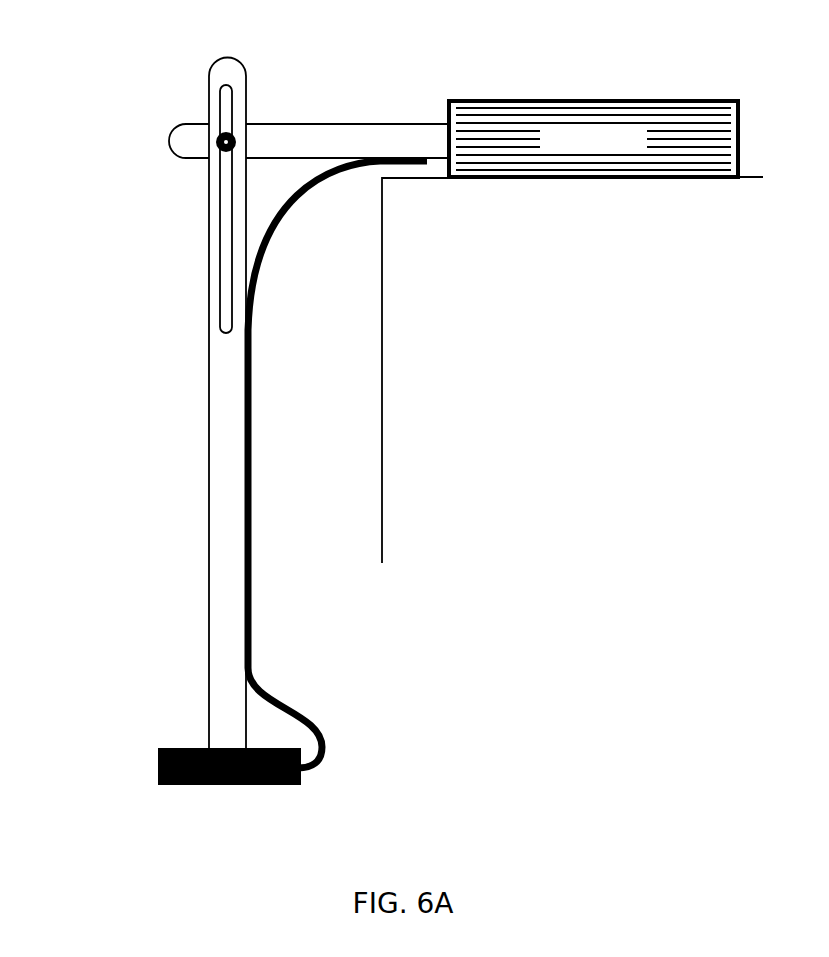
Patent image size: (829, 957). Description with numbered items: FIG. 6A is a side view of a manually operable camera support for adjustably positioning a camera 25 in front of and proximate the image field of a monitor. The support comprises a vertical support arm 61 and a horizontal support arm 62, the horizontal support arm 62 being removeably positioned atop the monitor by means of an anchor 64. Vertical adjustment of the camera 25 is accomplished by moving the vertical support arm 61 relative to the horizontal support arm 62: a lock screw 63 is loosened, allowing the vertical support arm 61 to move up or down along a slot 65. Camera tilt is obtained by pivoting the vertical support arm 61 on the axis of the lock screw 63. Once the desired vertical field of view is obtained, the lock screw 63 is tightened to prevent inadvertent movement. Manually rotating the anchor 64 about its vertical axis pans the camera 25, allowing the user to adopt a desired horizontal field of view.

The camera 25 is at (158, 769).
The vertical support arm 61 is at (209, 428).
The horizontal support arm 62 is at (344, 124).
The lock screw 63 is at (220, 136).
The anchor 64 is at (497, 101).
The slot 65 is at (220, 278).